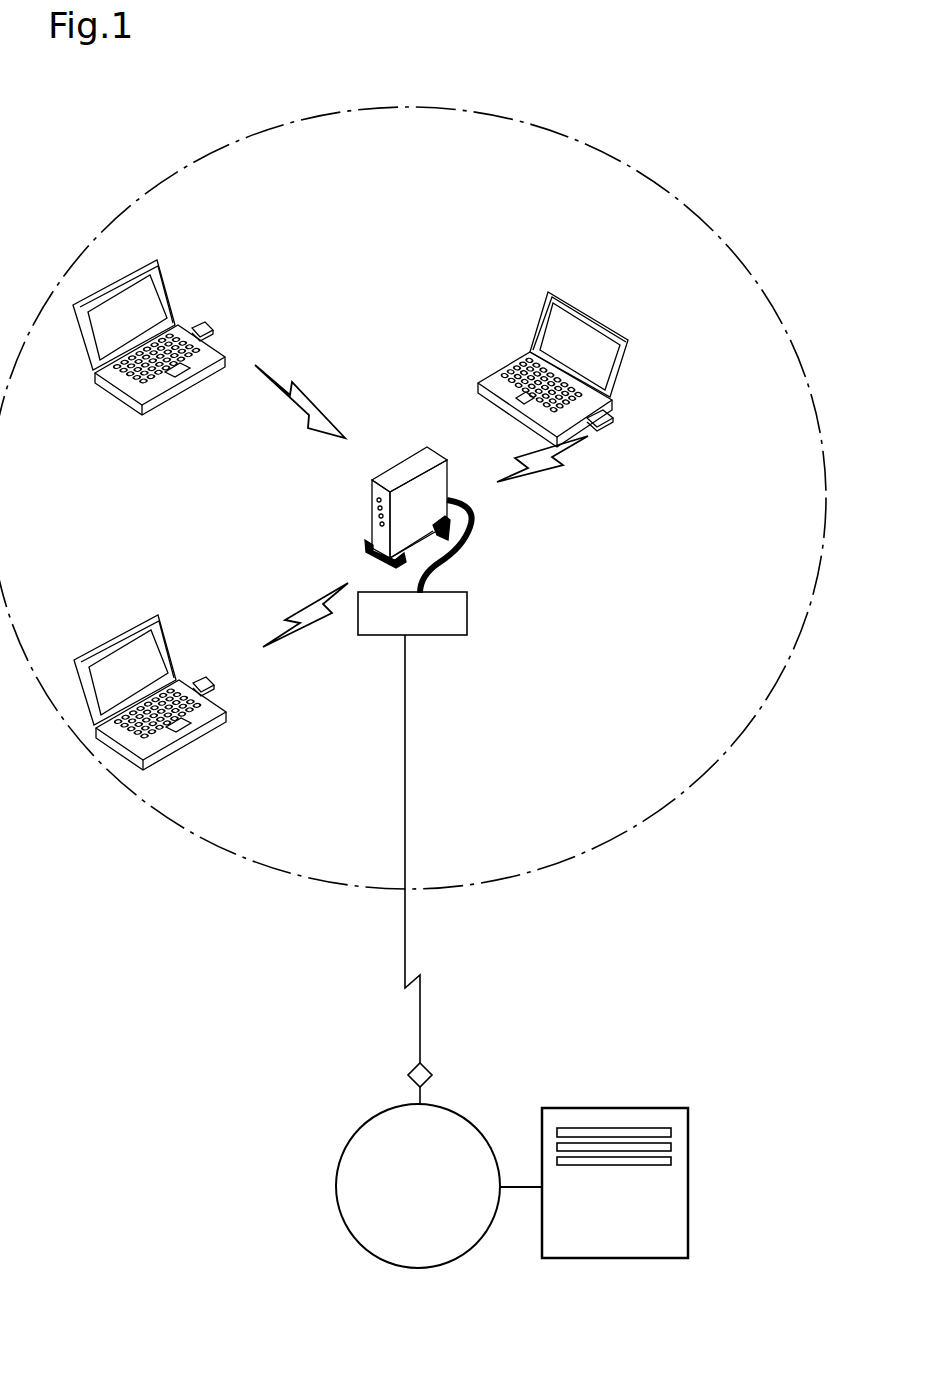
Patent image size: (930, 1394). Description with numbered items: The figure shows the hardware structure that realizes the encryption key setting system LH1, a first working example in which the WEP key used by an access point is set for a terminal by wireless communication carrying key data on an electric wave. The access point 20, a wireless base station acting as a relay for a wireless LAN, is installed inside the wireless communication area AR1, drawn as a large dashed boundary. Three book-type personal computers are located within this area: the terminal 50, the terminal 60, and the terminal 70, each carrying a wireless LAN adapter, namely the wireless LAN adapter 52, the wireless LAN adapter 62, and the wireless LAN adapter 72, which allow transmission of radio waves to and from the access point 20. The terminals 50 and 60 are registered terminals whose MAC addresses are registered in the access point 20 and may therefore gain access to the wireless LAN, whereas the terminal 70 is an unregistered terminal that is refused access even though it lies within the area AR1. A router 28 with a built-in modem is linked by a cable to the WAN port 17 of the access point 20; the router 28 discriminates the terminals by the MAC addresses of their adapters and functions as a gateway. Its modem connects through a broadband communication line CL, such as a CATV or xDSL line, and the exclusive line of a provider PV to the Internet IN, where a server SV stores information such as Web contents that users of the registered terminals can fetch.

The terminal 60 is at (165, 275).
The wireless LAN adapter 62 is at (206, 324).
The terminal 50 is at (623, 373).
The wireless LAN adapter 52 is at (614, 420).
The terminal 70 is at (166, 630).
The wireless LAN adapter 72 is at (207, 679).
The access point 20 is at (370, 538).
The WAN port 17 is at (446, 500).
The router 28 is at (467, 618).
The encryption key setting system LH1 is at (680, 127).
The wireless communication area AR1 is at (723, 235).
The broadband communication line CL is at (405, 945).
The provider PV is at (408, 1075).
The Internet IN is at (335, 1185).
The server SV is at (673, 1200).